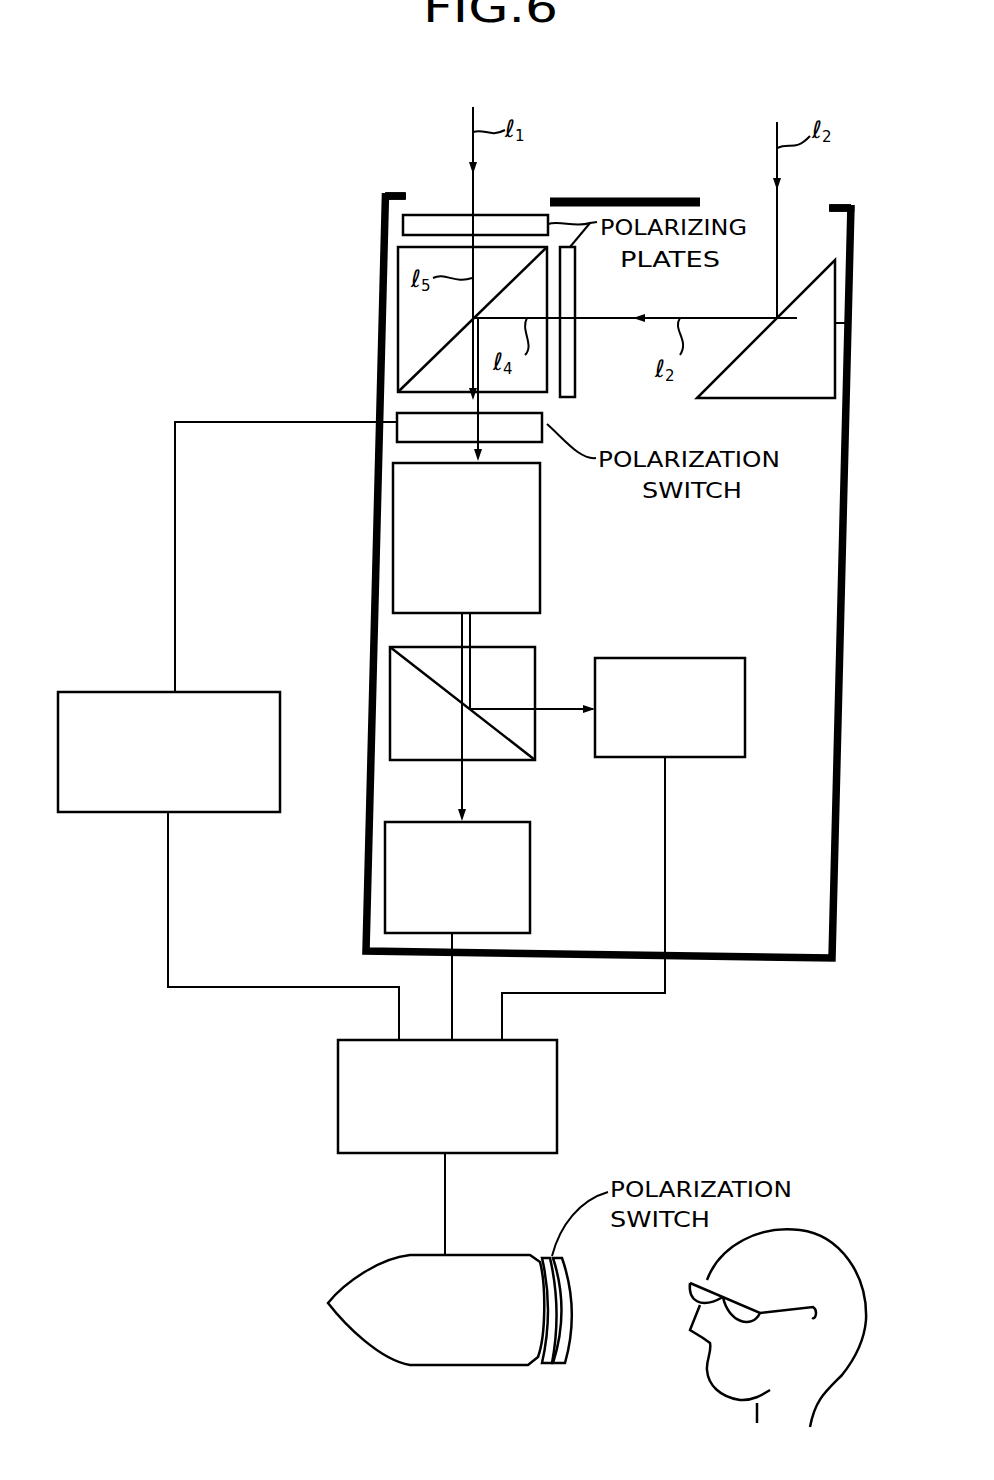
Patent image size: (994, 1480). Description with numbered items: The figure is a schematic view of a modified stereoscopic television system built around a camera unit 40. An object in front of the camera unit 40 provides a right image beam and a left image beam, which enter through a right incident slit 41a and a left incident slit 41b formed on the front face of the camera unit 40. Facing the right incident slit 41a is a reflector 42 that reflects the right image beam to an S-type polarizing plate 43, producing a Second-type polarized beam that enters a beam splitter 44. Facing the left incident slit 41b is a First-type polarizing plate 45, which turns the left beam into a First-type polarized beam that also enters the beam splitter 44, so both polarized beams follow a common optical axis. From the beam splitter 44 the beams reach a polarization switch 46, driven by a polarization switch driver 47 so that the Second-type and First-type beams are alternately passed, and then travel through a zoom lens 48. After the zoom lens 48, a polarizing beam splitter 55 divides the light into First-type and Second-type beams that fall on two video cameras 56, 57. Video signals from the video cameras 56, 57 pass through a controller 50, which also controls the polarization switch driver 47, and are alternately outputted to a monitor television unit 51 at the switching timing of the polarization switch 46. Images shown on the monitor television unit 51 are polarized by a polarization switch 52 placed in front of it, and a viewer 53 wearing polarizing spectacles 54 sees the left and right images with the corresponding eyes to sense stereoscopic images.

The camera unit 40 is at (853, 553).
The right incident slit 41a is at (790, 230).
The left incident slit 41b is at (447, 192).
The reflector 42 is at (803, 398).
The S-type polarizing plate 43 is at (567, 397).
The beam splitter 44 is at (423, 307).
The First-type polarizing plate 45 is at (403, 222).
The polarization switch 46 is at (542, 430).
The polarization switch driver 47 is at (97, 812).
The zoom lens 48 is at (540, 585).
The controller 50 is at (557, 1125).
The monitor television unit 51 is at (440, 1365).
The polarization switch 52 is at (570, 1337).
The viewer 53 is at (855, 1247).
The polarizing spectacles 54 is at (745, 1300).
The polarizing beam splitter 55 is at (535, 743).
The video camera 56 is at (745, 700).
The video camera 57 is at (530, 878).